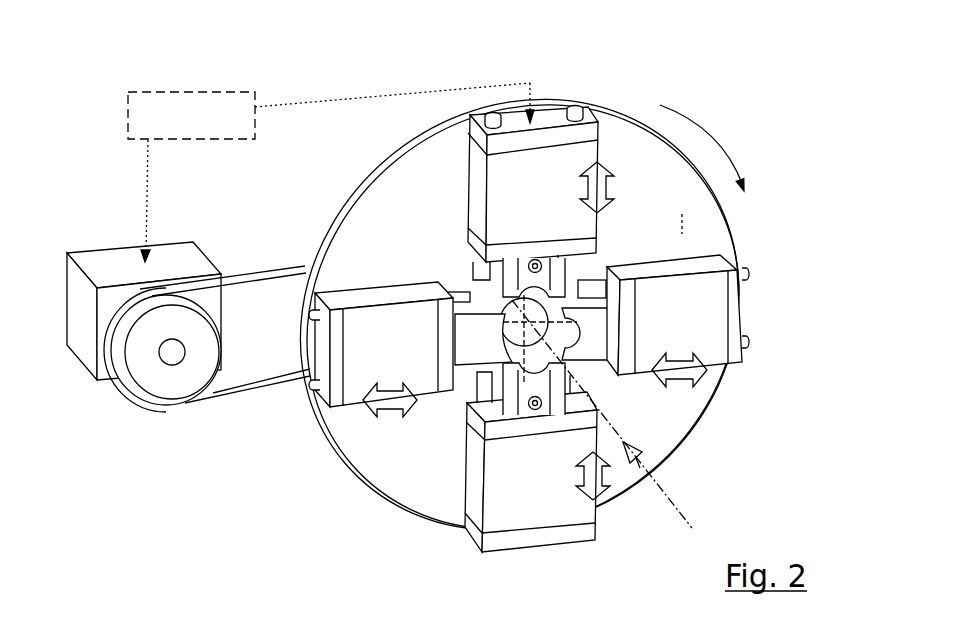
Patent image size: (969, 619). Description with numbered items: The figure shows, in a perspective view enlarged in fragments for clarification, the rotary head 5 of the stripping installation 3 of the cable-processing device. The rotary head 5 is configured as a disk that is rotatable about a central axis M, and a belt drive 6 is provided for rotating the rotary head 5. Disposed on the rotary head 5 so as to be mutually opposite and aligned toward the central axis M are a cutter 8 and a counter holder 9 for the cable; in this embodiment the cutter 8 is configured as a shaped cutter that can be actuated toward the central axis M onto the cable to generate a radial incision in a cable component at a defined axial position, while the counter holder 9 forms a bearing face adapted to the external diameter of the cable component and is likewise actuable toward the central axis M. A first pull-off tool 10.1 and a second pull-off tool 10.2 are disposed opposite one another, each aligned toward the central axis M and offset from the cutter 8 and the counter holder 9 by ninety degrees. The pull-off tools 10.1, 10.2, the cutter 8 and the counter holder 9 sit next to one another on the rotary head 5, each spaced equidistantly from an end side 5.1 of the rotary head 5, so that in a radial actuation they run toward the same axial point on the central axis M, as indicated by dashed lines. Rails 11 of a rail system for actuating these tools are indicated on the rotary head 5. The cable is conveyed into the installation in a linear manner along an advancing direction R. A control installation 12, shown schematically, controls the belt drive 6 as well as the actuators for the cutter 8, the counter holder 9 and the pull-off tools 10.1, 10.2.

The stripping installation 3 is at (602, 78).
The rotary head 5 is at (352, 205).
The end side of the rotary head 5.1 is at (684, 223).
The belt drive 6 is at (199, 440).
The cutter 8 is at (545, 275).
The counter holder 9 is at (547, 385).
The first pull-off tool 10.1 is at (468, 328).
The second pull-off tool 10.2 is at (593, 330).
The rails 11 is at (483, 382).
The control installation 12 is at (180, 91).
The central axis M is at (683, 510).
The advancing direction R is at (640, 470).